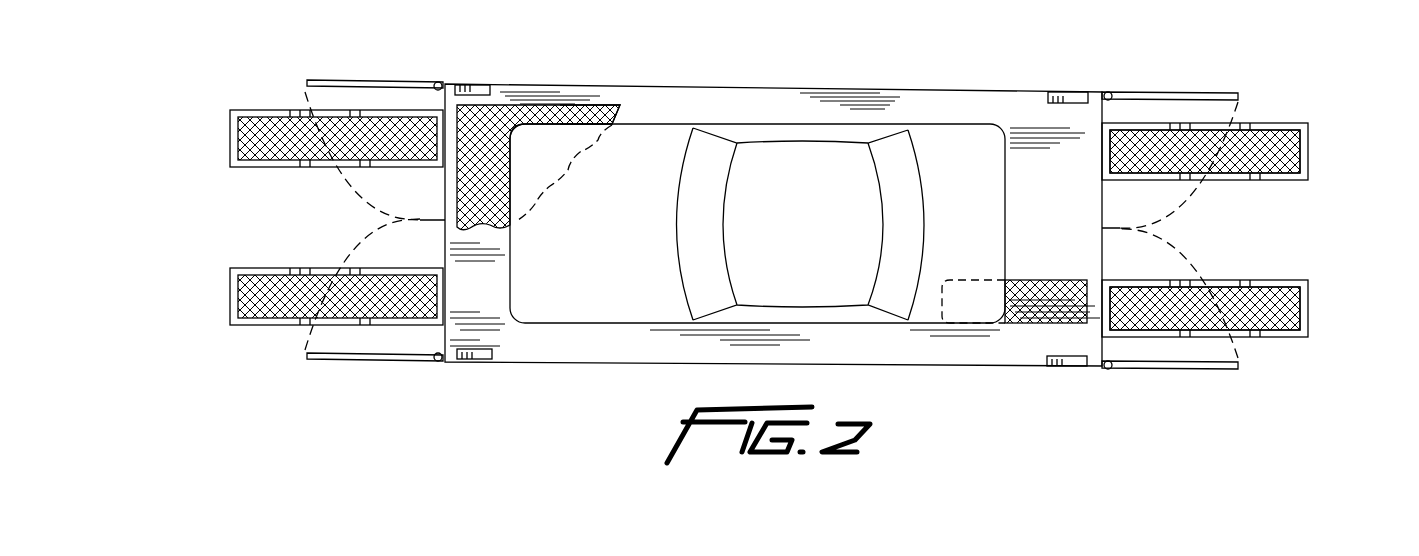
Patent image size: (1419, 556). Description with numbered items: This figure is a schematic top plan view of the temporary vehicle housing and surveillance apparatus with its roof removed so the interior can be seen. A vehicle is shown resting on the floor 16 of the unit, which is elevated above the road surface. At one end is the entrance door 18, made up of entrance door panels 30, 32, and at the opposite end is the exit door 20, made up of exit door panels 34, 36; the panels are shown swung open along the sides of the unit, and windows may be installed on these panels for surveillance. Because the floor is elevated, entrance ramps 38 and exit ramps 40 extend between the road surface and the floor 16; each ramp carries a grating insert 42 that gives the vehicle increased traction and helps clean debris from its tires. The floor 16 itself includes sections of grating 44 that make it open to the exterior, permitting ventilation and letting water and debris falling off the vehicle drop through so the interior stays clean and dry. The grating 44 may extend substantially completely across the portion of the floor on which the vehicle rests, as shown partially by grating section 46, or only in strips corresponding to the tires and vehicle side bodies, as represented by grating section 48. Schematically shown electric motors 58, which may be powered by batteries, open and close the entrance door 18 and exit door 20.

The floor 16 is at (555, 348).
The entrance door 18 is at (1158, 92).
The exit door 20 is at (330, 80).
The entrance door panel 30 is at (1215, 92).
The entrance door panel 32 is at (1215, 369).
The exit door panel 34 is at (418, 80).
The exit door panel 36 is at (390, 360).
The entrance ramp 38 is at (1275, 123).
The exit ramp 40 is at (258, 110).
The grating insert 42 is at (1290, 150).
The grating 44 is at (500, 108).
The grating section 46 is at (560, 108).
The grating section 48 is at (1068, 315).
The electric motor 58 is at (1075, 92).